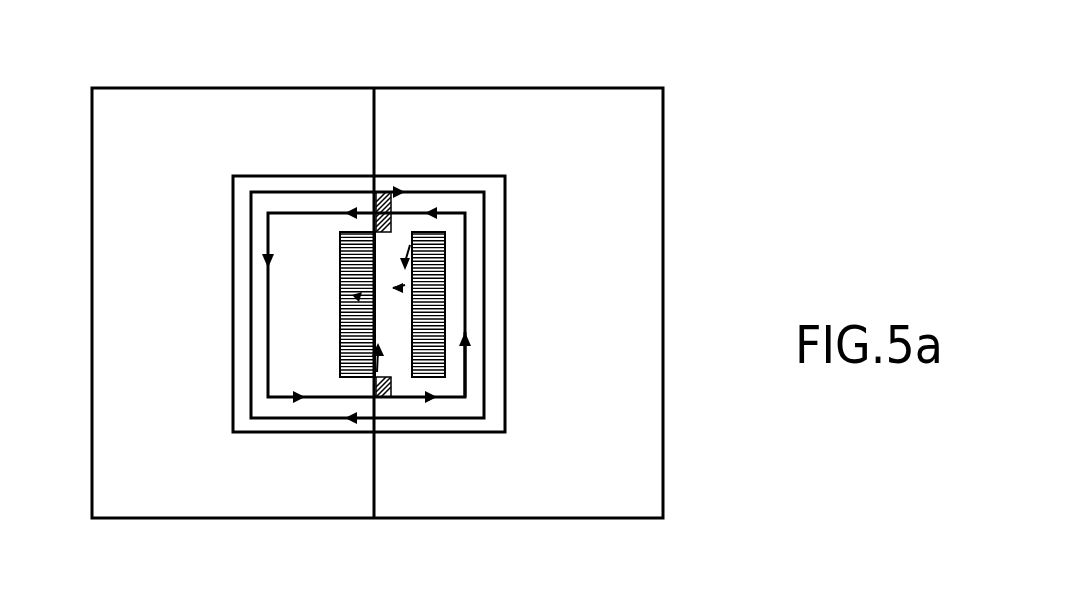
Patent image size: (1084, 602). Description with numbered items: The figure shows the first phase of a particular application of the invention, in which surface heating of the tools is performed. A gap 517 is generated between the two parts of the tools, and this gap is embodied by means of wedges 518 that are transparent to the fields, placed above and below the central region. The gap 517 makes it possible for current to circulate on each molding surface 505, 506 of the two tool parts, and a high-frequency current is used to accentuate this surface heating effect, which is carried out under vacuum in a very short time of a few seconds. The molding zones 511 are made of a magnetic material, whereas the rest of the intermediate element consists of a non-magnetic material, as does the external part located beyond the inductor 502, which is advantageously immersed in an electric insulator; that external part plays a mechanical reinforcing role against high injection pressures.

The inductor 502 is at (473, 189).
The molding surface 505 is at (444, 302).
The molding surface 506 is at (343, 299).
The molding zone 511 is at (438, 362).
The gap 517 is at (413, 280).
The wedge 518 is at (383, 192).